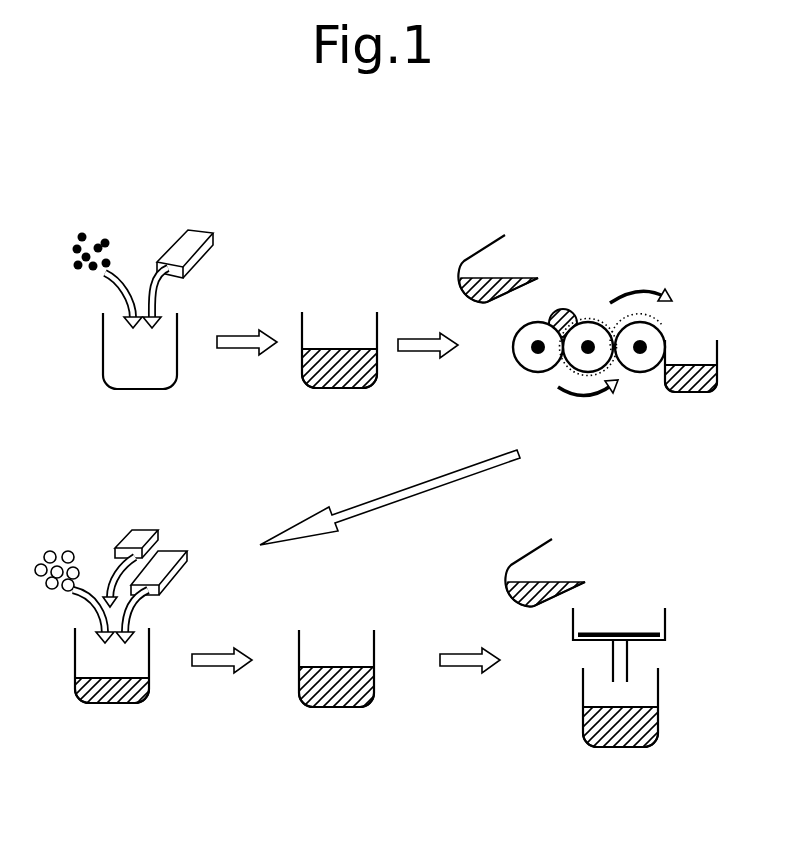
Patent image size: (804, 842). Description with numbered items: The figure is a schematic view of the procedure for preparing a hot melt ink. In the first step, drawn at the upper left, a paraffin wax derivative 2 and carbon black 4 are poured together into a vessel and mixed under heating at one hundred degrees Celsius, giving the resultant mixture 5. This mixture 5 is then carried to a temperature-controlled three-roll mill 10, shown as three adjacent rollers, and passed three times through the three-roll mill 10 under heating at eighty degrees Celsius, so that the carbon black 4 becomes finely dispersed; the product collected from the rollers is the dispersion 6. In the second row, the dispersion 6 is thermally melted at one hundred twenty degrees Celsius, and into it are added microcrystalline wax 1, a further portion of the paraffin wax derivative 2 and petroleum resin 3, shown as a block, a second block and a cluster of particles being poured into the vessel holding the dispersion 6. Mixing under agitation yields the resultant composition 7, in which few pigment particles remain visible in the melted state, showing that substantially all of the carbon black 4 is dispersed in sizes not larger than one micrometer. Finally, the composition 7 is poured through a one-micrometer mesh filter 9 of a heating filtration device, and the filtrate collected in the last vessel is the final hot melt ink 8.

The microcrystalline wax 1 is at (177, 550).
The paraffin wax derivative 2 is at (193, 238).
The petroleum resin 3 is at (52, 552).
The carbon black 4 is at (95, 230).
The resultant mixture 5 is at (320, 353).
The dispersion 6 is at (690, 370).
The resultant composition 7 is at (340, 673).
The hot melt ink 8 is at (648, 713).
The mesh filter 9 is at (623, 632).
The three-roll mill 10 is at (520, 347).